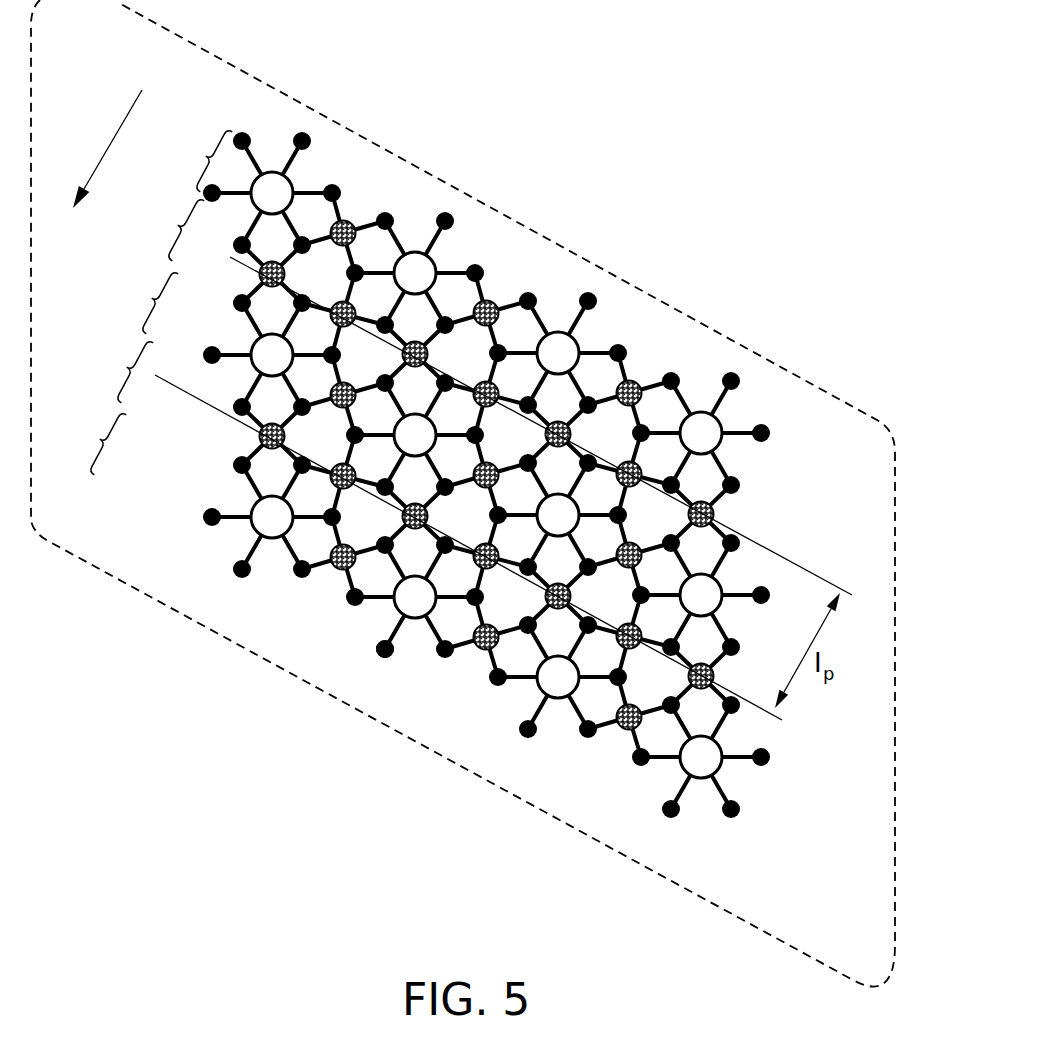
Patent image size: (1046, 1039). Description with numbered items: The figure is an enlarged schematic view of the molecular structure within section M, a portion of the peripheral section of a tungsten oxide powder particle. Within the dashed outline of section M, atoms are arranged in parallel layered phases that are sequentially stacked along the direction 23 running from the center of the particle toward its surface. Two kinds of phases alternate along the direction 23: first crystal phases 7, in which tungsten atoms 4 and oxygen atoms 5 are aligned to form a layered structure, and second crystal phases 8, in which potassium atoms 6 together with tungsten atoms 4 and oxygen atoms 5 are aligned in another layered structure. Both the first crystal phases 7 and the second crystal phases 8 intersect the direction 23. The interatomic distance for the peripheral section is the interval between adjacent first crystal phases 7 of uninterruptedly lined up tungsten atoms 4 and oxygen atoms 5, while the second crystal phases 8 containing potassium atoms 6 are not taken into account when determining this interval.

The tungsten atom 4 is at (332, 570).
The oxygen atom 5 is at (381, 656).
The potassium atom 6 is at (540, 690).
The first crystal phase 7 is at (178, 225).
The second crystal phase 8 is at (206, 156).
The direction toward the particle surface 23 is at (107, 148).
The section M is at (741, 345).